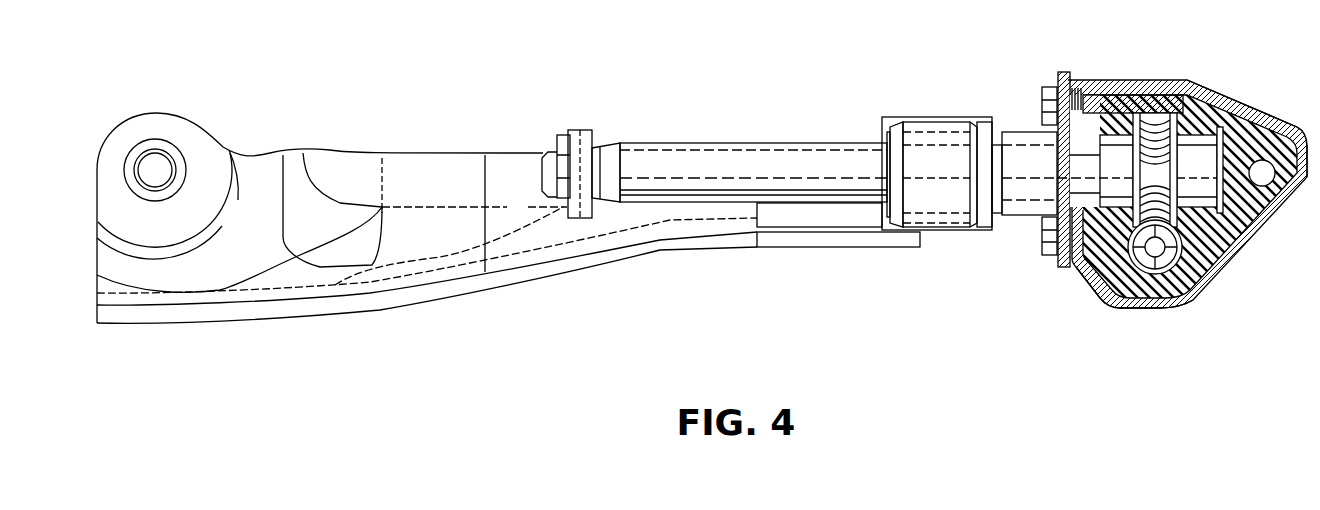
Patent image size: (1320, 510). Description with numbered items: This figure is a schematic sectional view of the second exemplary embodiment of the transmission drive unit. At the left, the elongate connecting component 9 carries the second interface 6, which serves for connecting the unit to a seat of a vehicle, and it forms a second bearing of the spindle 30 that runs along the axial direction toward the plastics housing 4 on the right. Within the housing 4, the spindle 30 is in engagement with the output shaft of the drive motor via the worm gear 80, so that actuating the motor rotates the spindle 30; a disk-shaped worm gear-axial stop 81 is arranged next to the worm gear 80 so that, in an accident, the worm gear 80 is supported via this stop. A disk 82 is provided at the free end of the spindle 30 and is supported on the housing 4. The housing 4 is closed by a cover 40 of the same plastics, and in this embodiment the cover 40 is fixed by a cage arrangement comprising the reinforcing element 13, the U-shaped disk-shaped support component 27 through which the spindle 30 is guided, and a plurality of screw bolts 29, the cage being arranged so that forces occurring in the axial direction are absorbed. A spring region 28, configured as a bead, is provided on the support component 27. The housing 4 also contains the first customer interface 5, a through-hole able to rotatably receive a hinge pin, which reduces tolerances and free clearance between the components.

The housing 4 is at (1130, 287).
The first customer interface 5 is at (1262, 173).
The second interface 6 is at (155, 168).
The connecting component 9 is at (430, 182).
The reinforcing element 13 is at (1228, 102).
The disk-shaped support component 27 is at (1063, 262).
The spring region 28 is at (1100, 287).
The screw bolts 29 is at (1043, 100).
The spindle 30 is at (745, 165).
The cover 40 is at (1107, 100).
The worm gear 80 is at (1163, 175).
The worm gear-axial stop 81 is at (1128, 103).
The disk 82 is at (1242, 253).